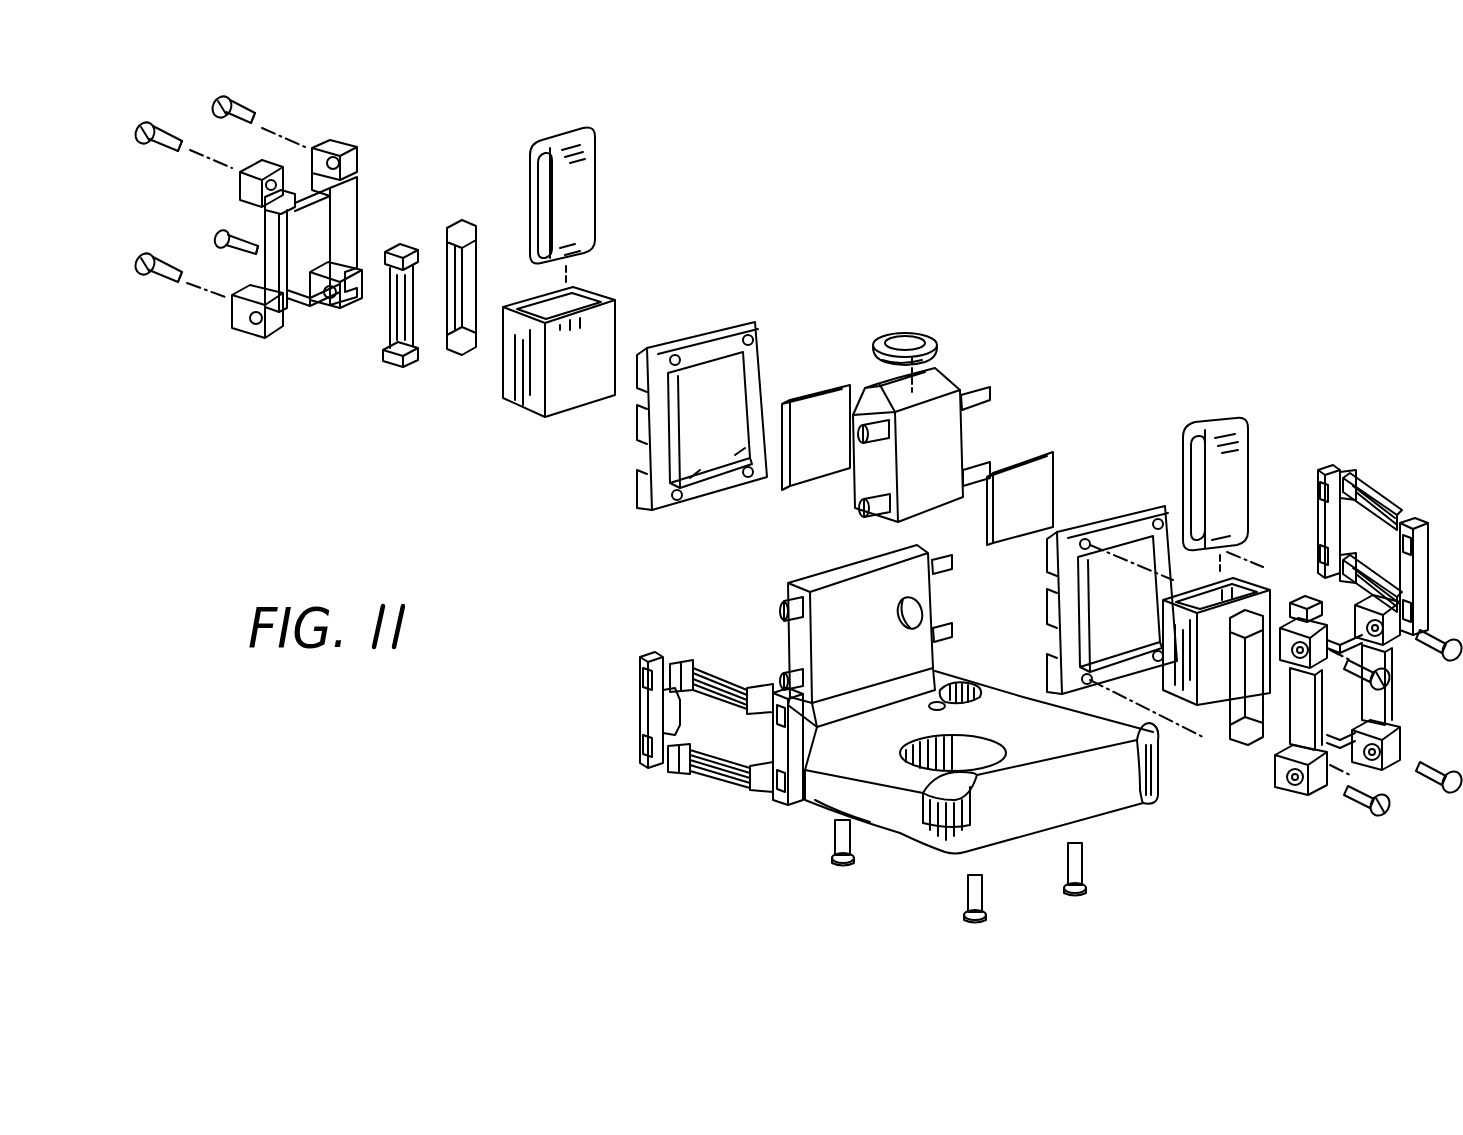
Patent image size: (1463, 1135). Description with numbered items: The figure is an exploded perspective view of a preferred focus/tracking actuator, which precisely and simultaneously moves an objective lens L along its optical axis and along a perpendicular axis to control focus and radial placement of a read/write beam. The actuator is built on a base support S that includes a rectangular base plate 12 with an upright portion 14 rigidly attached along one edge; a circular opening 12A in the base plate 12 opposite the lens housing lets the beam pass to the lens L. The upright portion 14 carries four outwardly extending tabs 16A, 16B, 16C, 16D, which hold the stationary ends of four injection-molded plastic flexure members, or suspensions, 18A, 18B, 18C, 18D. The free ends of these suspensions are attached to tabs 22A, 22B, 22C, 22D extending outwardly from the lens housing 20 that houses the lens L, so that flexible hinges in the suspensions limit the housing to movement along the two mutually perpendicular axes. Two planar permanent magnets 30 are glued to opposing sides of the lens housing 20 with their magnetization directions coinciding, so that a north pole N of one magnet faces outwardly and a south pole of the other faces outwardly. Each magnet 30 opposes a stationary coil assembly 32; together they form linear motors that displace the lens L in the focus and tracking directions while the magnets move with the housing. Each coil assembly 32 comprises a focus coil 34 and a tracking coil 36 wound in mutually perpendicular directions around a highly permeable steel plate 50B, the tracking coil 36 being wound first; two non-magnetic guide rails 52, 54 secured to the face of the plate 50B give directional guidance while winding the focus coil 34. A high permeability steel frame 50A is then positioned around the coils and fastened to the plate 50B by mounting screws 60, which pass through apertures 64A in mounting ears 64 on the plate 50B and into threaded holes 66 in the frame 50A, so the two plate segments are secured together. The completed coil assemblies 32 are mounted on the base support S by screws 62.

The base plate 12 is at (885, 832).
The circular opening 12A is at (978, 738).
The upright portion 14 is at (861, 636).
The tab 16A is at (783, 678).
The tab 16B is at (783, 612).
The tab 16C is at (953, 566).
The tab 16D is at (953, 630).
The flexure member 18A is at (712, 780).
The flexure member 18B is at (712, 672).
The flexure member 18C is at (1385, 510).
The flexure member 18D is at (1368, 578).
The lens housing 20 is at (908, 440).
The tab 22A is at (868, 512).
The tab 22B is at (870, 445).
The tab 22C is at (990, 395).
The tab 22D is at (975, 470).
The permanent magnet 30 is at (917, 465).
The coil assembly 32 is at (455, 143).
The focus coil 34 is at (600, 285).
The tracking coil 36 is at (590, 145).
The steel frame 50A is at (750, 328).
The steel plate 50B is at (348, 228).
The guide rail 52 is at (452, 222).
The guide rail 54 is at (405, 368).
The mounting screw 60 is at (172, 125).
The screw 62 is at (832, 840).
The mounting ear 64 is at (335, 140).
The aperture 64A is at (358, 160).
The threaded hole 66 is at (755, 340).
The objective lens L is at (900, 345).
The north pole N is at (814, 388).
The base support S is at (800, 412).